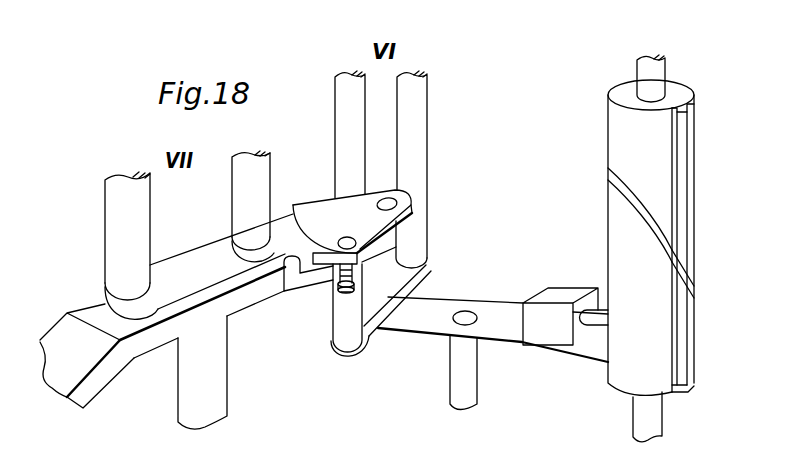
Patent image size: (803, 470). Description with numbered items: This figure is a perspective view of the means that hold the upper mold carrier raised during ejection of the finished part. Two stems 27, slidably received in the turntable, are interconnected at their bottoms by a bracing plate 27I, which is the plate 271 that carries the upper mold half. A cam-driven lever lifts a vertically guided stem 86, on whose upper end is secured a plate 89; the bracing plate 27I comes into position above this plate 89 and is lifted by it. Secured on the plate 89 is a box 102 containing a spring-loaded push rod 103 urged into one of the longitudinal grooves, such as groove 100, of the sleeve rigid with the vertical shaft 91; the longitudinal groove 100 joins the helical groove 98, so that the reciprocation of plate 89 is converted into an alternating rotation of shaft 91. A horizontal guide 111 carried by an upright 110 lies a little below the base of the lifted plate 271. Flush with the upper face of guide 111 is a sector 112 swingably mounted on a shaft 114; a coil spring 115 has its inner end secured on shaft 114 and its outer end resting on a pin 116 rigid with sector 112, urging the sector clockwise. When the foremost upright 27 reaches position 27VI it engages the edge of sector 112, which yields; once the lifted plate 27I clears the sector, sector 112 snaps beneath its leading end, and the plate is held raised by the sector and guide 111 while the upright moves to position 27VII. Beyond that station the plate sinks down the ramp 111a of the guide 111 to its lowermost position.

The upright position at station VII 27VII is at (138, 222).
The upright position at station VI 27VI is at (344, 112).
The stem 27 is at (413, 127).
The bracing plate 27I is at (197, 285).
The bracing plate 271 is at (373, 313).
The stem 86 is at (465, 381).
The plate 89 is at (421, 311).
The vertical shaft 91 is at (647, 69).
The helical groove 98 is at (632, 206).
The longitudinal groove 100 is at (678, 142).
The box 102 is at (559, 294).
The push rod 103 is at (597, 318).
The upright 110 is at (213, 384).
The horizontal guide 111 is at (100, 309).
The ramp 111a is at (80, 361).
The sector 112 is at (352, 227).
The shaft 114 is at (398, 204).
The coil spring 115 is at (353, 281).
The pin 116 is at (361, 263).